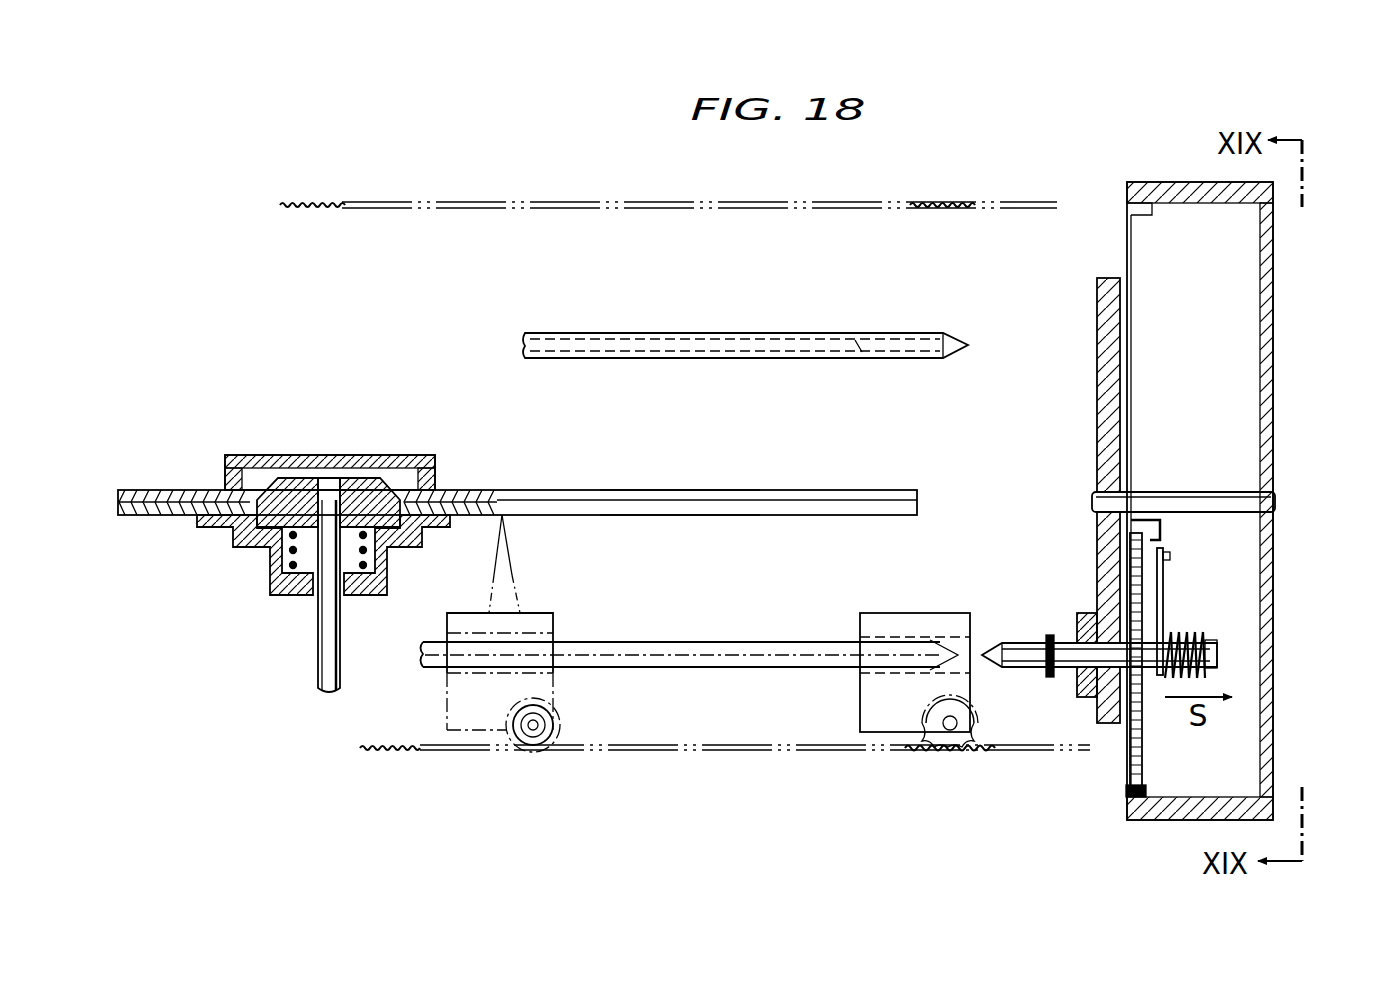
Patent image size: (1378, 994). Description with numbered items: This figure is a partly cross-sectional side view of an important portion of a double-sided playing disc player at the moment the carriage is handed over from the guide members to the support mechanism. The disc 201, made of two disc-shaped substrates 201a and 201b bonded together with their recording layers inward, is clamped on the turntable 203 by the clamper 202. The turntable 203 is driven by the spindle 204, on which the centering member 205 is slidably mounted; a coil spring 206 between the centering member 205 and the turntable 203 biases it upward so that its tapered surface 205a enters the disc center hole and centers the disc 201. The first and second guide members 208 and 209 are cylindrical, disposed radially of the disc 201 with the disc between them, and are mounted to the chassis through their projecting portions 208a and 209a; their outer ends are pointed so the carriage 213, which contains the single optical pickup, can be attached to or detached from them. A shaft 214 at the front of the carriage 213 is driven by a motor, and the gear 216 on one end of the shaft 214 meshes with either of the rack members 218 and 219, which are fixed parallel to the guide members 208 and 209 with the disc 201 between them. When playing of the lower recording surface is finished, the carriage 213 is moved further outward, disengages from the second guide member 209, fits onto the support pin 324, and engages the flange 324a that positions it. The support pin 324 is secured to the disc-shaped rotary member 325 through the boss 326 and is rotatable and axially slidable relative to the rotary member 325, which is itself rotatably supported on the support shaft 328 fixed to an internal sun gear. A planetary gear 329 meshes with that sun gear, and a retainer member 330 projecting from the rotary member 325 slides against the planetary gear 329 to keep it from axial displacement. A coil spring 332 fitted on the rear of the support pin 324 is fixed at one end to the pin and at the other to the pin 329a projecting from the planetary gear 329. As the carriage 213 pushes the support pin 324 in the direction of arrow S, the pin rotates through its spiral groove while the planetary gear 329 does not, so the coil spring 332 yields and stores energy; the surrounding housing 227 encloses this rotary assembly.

The disc 201 is at (766, 515).
The disc-shaped substrate 201a is at (677, 515).
The disc-shaped substrate 201b is at (686, 490).
The clamper 202 is at (234, 454).
The turntable 203 is at (267, 593).
The spindle 204 is at (320, 634).
The centering member 205 is at (291, 480).
The tapered surface 205a is at (390, 478).
The coil spring 206 is at (268, 570).
The first guide member 208 is at (808, 360).
The projecting portion 208a is at (860, 352).
The second guide member 209 is at (722, 640).
The projecting portion 209a is at (795, 640).
The carriage 213 is at (470, 727).
The shaft 214 is at (527, 735).
The gear 216 is at (545, 745).
The rack member 218 is at (937, 216).
The rack member 219 is at (915, 753).
The housing 227 is at (1150, 815).
The support pin 324 is at (1014, 634).
The flange 324a is at (1048, 632).
The rotary member 325 is at (1105, 323).
The boss 326 is at (1082, 688).
The support shaft 328 is at (1265, 500).
The planetary gear 329 is at (1142, 598).
The pin 329a is at (1167, 558).
The retainer member 330 is at (1162, 529).
The coil spring 332 is at (1214, 656).